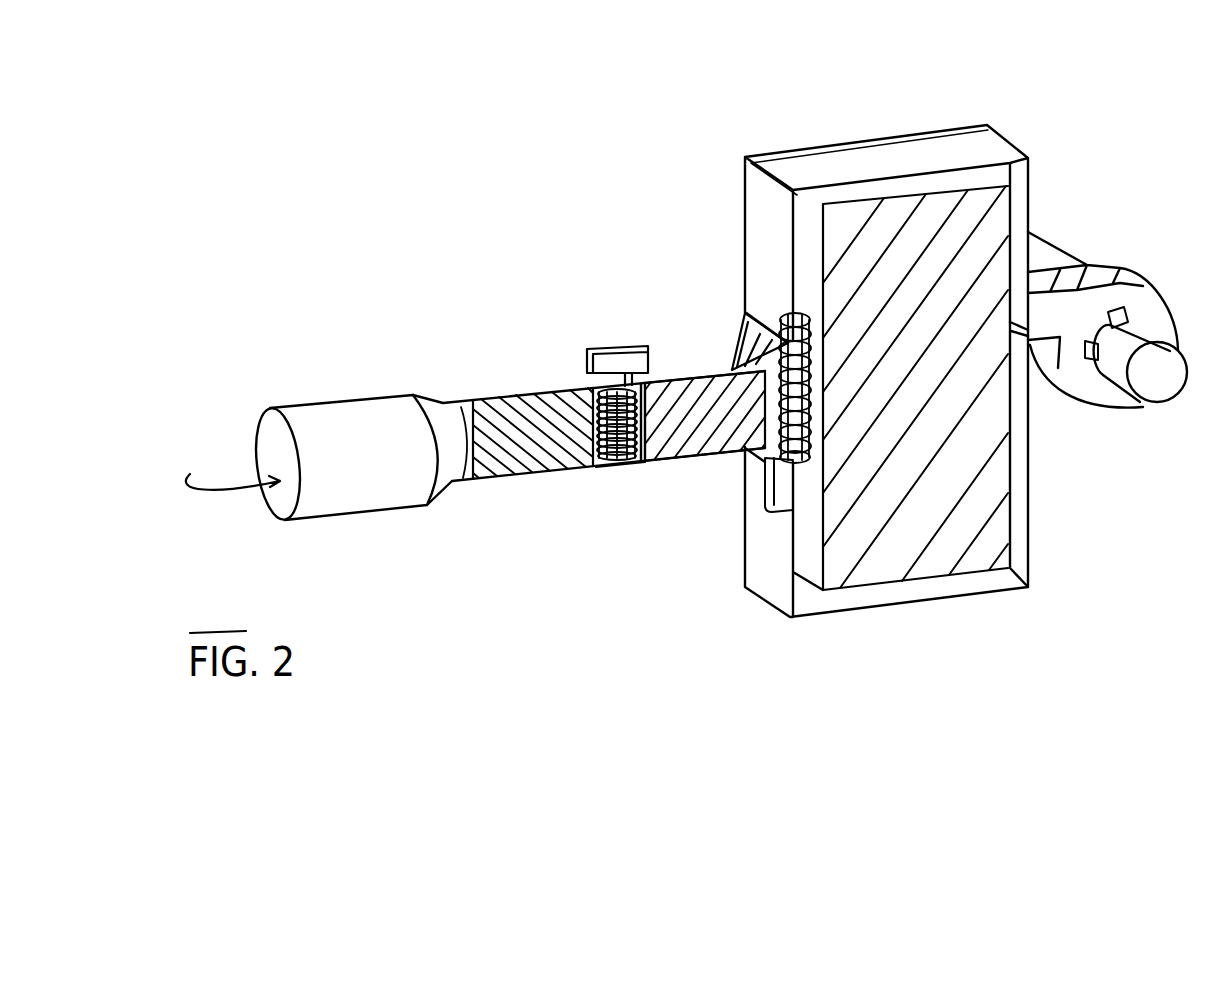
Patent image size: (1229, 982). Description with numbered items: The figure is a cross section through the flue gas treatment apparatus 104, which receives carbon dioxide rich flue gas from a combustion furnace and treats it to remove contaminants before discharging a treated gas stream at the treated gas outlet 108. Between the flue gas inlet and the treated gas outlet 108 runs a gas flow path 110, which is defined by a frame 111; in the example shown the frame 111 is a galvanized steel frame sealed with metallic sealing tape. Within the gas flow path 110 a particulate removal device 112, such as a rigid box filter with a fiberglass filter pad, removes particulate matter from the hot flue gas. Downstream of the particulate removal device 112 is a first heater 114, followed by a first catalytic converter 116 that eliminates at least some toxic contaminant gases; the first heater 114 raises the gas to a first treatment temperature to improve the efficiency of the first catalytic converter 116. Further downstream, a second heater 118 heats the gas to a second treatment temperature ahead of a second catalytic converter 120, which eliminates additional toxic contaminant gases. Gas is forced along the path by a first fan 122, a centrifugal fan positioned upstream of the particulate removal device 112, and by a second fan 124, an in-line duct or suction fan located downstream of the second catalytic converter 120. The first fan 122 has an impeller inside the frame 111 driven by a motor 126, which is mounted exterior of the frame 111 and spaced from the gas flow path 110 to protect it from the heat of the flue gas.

The flue gas treatment apparatus 104 is at (861, 103).
The treated gas outlet 108 is at (227, 460).
The gas flow path 110 is at (457, 429).
The frame 111 is at (613, 468).
The particulate removal device 112 is at (903, 555).
The first heater 114 is at (781, 426).
The first catalytic converter 116 is at (677, 377).
The second heater 118 is at (628, 461).
The second catalytic converter 120 is at (511, 415).
The first fan 122 is at (1095, 391).
The second fan 124 is at (356, 420).
The motor 126 is at (1148, 383).